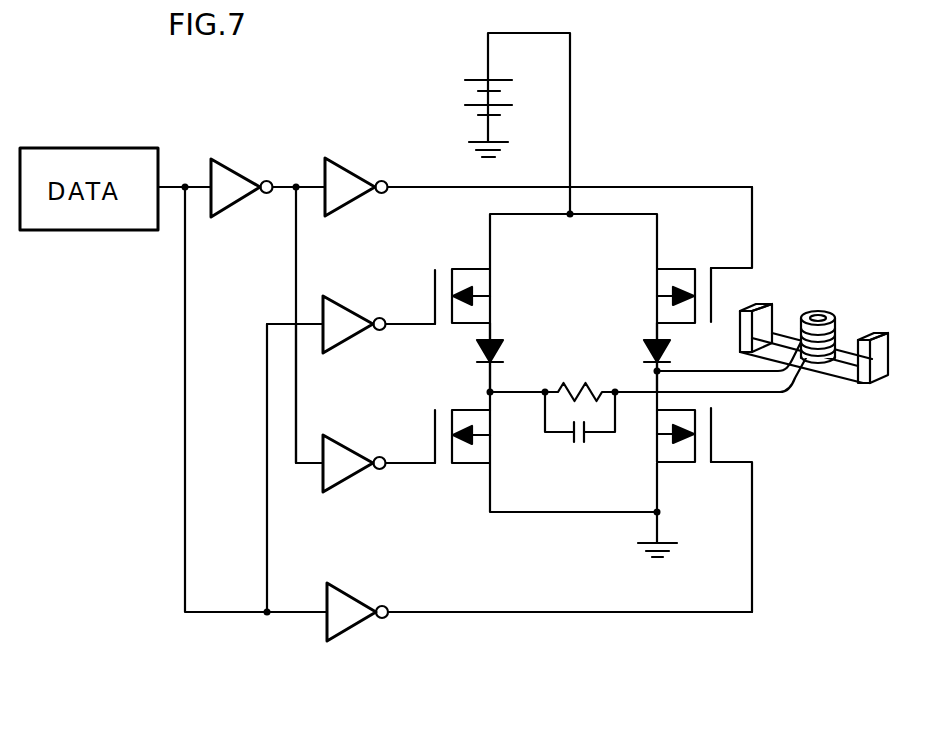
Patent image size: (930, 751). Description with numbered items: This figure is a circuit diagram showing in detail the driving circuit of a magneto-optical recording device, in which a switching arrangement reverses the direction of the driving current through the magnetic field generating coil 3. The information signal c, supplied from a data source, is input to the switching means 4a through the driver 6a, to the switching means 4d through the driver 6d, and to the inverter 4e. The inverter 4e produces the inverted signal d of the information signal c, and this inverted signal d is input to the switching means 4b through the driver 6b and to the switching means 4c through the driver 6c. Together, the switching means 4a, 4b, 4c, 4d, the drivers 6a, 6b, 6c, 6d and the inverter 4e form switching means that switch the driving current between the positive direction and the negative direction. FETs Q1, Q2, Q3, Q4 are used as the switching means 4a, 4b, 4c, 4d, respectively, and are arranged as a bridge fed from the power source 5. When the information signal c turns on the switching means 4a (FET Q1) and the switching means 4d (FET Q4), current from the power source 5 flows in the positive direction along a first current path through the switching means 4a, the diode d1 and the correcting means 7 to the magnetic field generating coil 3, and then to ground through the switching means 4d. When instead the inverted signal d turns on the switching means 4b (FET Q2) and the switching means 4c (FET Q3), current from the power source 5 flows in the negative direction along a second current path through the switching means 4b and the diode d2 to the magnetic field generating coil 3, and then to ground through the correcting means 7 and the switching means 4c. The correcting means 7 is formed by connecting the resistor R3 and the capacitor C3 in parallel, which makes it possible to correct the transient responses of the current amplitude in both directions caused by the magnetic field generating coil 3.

The power source 5 is at (465, 92).
The inverter 4e is at (236, 166).
The driver 6a is at (352, 300).
The driver 6b is at (340, 166).
The driver 6c is at (352, 442).
The driver 6d is at (350, 596).
The switching means 4a is at (440, 327).
The switching means 4b is at (722, 285).
The switching means 4c is at (445, 464).
The switching means 4d is at (718, 430).
The FET Q1 is at (492, 296).
The FET Q2 is at (654, 296).
The FET Q3 is at (492, 436).
The FET Q4 is at (656, 436).
The diode d1 is at (500, 349).
The diode d2 is at (645, 349).
The resistor R3 is at (580, 377).
The capacitor C3 is at (538, 493).
The correcting means 7 is at (554, 431).
The coil L is at (818, 321).
The magnetic field generating coil 3 is at (838, 325).
The information signal c is at (185, 380).
The inverted signal d is at (296, 410).